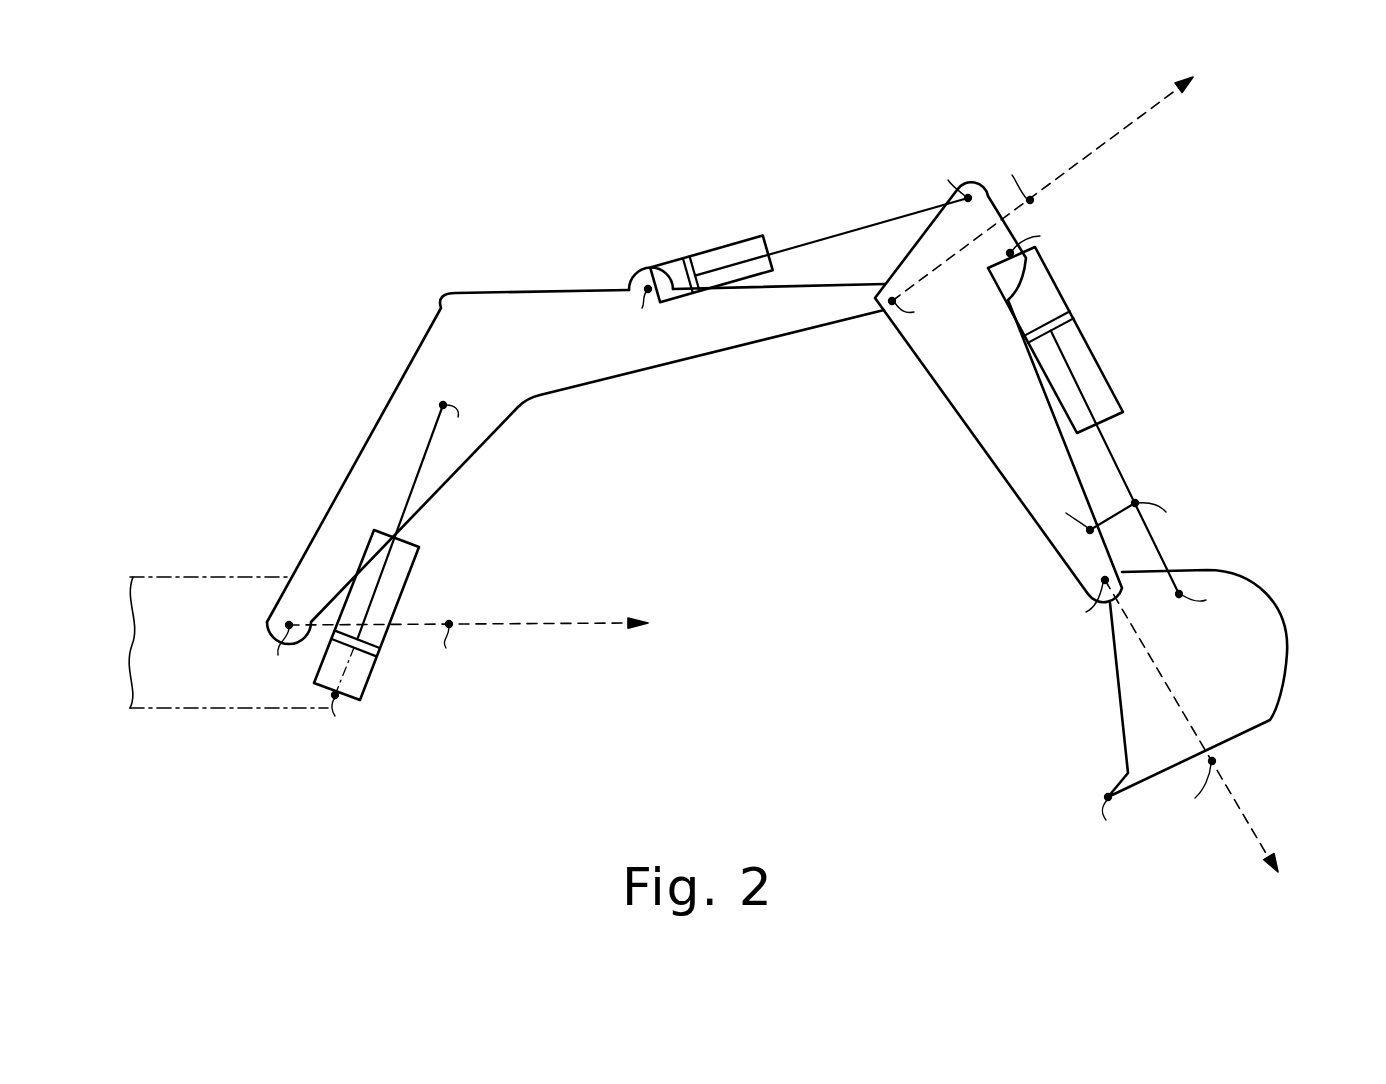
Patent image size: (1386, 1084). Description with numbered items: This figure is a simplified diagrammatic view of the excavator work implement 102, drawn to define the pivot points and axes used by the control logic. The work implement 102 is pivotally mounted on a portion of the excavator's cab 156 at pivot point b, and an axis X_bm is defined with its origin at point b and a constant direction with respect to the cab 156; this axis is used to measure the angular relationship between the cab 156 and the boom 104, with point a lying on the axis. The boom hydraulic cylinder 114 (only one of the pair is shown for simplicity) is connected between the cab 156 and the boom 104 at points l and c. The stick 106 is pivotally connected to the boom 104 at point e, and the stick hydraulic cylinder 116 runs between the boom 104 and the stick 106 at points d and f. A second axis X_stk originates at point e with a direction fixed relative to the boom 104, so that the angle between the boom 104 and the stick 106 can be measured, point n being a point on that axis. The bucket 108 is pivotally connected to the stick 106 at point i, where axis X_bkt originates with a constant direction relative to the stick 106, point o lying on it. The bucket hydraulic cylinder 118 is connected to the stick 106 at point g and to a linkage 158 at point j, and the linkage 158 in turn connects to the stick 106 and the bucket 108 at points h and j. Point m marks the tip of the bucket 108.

The work implement 102 is at (766, 463).
The boom 104 is at (364, 436).
The stick 106 is at (960, 418).
The bucket 108 is at (1275, 608).
The boom hydraulic cylinder 114 is at (399, 552).
The stick hydraulic cylinder 116 is at (727, 244).
The bucket hydraulic cylinder 118 is at (1100, 360).
The cab 156 is at (228, 642).
The linkage 158 is at (1176, 472).